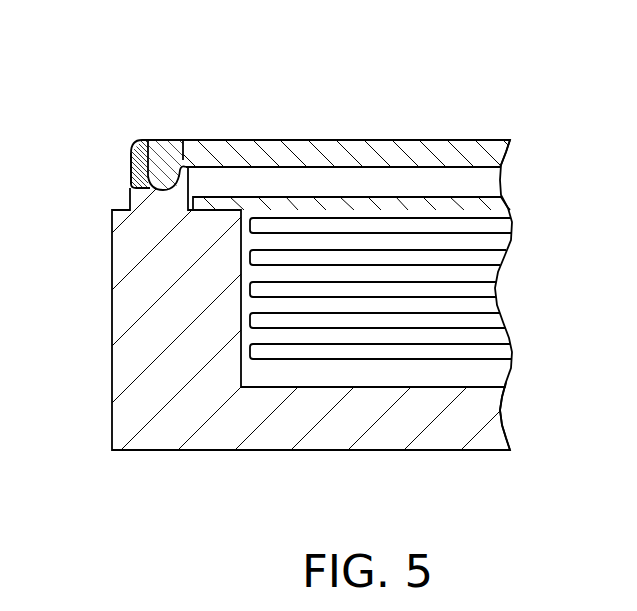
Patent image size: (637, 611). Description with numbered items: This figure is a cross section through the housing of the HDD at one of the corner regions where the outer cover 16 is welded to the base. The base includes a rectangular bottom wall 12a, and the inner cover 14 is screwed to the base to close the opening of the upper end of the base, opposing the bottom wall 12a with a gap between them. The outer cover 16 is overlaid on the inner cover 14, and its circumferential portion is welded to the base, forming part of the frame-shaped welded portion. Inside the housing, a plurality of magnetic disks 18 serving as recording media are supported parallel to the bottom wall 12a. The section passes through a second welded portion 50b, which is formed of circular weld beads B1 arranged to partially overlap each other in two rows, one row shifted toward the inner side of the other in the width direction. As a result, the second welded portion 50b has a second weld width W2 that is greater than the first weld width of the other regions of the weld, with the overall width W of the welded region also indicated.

The bottom wall 12a is at (322, 450).
The inner cover 14 is at (432, 198).
The outer cover 16 is at (322, 152).
The magnetic disks 18 is at (503, 352).
The weld beads B1 is at (126, 160).
The second welded portion 50b is at (126, 165).
The width W is at (210, 43).
The second weld width W2 is at (227, 85).